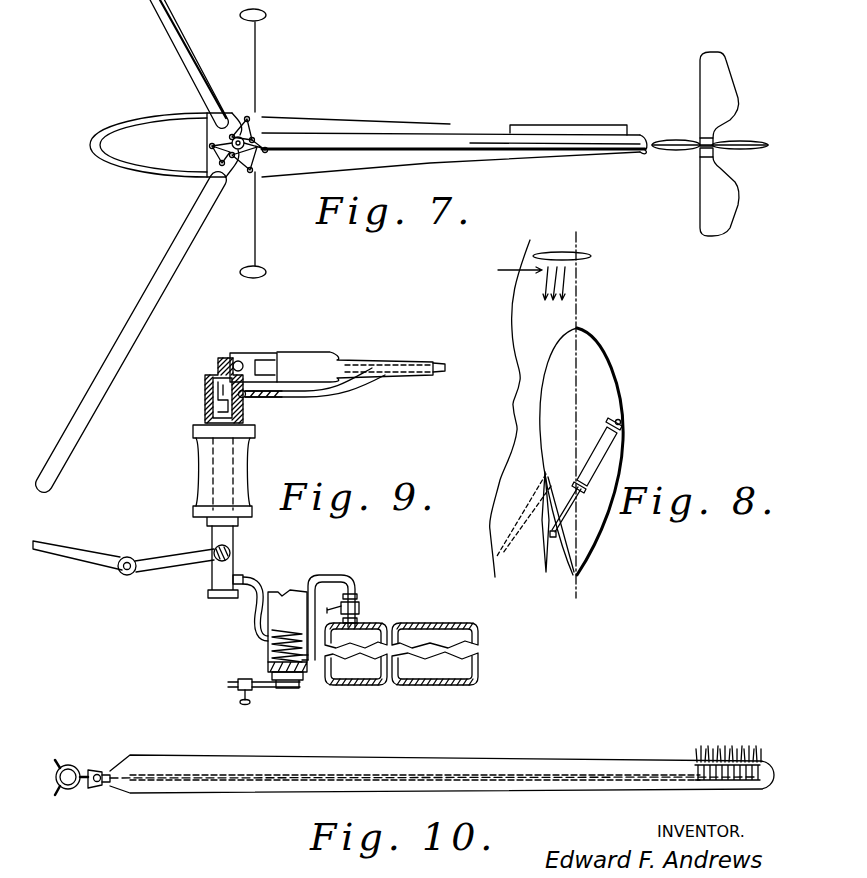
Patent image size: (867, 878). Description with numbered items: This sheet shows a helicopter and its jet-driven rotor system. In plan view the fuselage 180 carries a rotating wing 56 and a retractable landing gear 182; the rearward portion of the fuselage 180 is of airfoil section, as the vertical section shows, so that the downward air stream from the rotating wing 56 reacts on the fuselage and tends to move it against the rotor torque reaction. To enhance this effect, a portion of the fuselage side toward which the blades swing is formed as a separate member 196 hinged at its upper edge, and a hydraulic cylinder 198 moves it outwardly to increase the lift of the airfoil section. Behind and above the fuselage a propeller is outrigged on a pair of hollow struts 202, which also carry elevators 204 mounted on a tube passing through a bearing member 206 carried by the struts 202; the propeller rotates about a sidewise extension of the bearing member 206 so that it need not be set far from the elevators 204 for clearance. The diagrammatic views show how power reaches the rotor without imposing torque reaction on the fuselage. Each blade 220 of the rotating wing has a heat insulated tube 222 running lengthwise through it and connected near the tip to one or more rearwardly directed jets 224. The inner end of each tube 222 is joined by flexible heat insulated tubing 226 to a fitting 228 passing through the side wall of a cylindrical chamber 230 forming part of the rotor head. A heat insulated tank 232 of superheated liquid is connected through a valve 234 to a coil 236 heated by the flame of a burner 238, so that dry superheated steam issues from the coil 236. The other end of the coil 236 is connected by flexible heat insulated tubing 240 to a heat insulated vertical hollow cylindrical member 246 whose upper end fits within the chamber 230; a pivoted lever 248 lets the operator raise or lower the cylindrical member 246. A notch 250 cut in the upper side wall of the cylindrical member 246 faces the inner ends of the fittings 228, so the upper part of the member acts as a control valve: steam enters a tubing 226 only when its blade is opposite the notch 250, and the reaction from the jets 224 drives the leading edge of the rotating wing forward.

In FIG. 7, the rotating wing 56 is at (269, 122).
In FIG. 7, the fuselage 180 is at (350, 118).
In FIG. 8, the fuselage 180 is at (615, 367).
In FIG. 7, the retractable landing gear 182 is at (258, 70).
In FIG. 7, the separate hinged member 196 is at (580, 114).
In FIG. 8, the separate hinged member 196 is at (541, 541).
In FIG. 8, the hydraulic cylinder 198 is at (598, 469).
In FIG. 7, the hollow struts 202 is at (662, 150).
In FIG. 7, the elevators 204 is at (724, 73).
In FIG. 7, the bearing member 206 is at (725, 165).
In FIG. 10, the blade 220 is at (472, 763).
In FIG. 9, the heat insulated tube 222 is at (430, 350).
In FIG. 10, the heat insulated tube 222 is at (512, 784).
In FIG. 10, the rearwardly directed jets 224 is at (711, 760).
In FIG. 9, the flexible heat insulated tubing 226 is at (328, 398).
In FIG. 9, the fitting 228 is at (246, 399).
In FIG. 9, the cylindrical chamber 230 is at (213, 385).
In FIG. 9, the heat insulated tank 232 is at (450, 665).
In FIG. 9, the valve 234 is at (358, 606).
In FIG. 9, the coil 236 is at (267, 642).
In FIG. 9, the burner 238 is at (289, 688).
In FIG. 9, the flexible heat insulated tubing 240 is at (250, 610).
In FIG. 9, the vertical hollow cylindrical member 246 is at (236, 552).
In FIG. 9, the pivoted lever 248 is at (157, 566).
In FIG. 9, the notch 250 is at (243, 404).